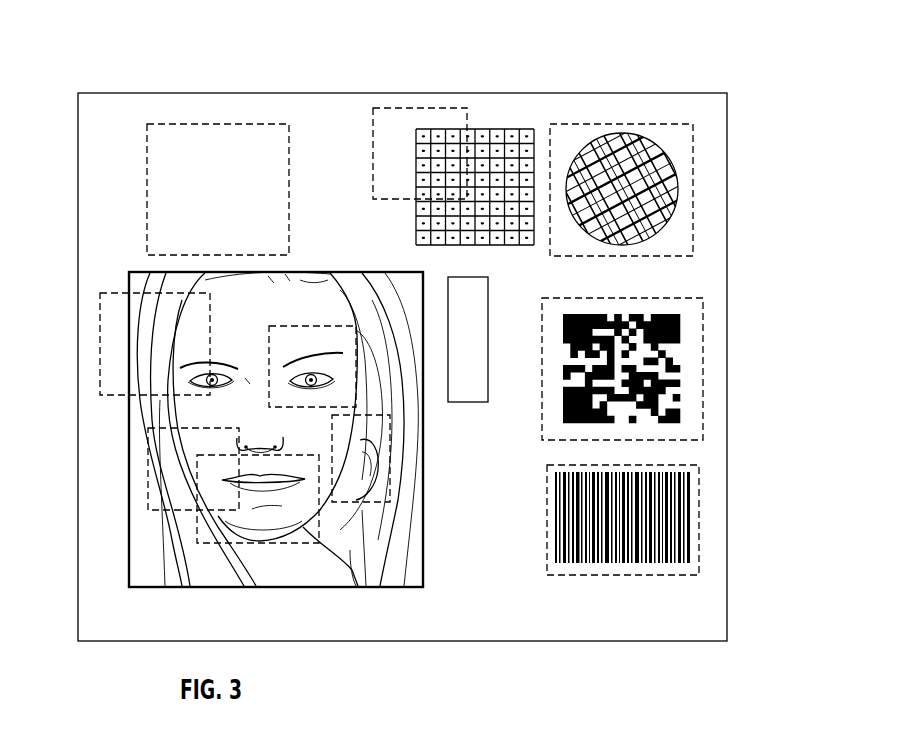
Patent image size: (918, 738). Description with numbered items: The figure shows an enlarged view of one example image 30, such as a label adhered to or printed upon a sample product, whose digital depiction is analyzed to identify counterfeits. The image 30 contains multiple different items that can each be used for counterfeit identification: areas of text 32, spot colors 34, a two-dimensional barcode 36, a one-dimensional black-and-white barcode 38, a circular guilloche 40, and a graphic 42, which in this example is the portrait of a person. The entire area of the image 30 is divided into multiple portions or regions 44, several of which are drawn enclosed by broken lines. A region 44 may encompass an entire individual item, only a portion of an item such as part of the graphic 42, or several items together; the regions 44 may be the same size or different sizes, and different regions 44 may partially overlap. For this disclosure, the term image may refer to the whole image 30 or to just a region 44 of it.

The image 30 is at (246, 0).
The text 32 is at (108, 148).
The spot colors 34 is at (495, 130).
The two-dimensional barcode 36 is at (683, 382).
The one-dimensional black-and-white barcode 38 is at (685, 522).
The circular guilloche 40 is at (656, 235).
The graphic 42 is at (362, 532).
The region 44 is at (100, 360).